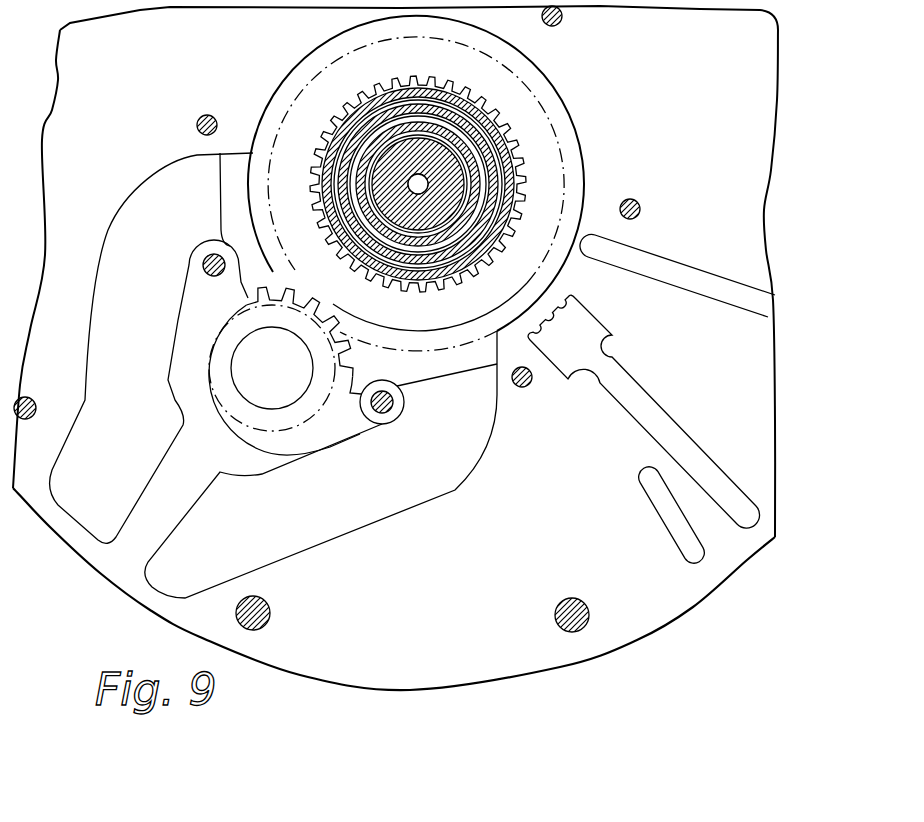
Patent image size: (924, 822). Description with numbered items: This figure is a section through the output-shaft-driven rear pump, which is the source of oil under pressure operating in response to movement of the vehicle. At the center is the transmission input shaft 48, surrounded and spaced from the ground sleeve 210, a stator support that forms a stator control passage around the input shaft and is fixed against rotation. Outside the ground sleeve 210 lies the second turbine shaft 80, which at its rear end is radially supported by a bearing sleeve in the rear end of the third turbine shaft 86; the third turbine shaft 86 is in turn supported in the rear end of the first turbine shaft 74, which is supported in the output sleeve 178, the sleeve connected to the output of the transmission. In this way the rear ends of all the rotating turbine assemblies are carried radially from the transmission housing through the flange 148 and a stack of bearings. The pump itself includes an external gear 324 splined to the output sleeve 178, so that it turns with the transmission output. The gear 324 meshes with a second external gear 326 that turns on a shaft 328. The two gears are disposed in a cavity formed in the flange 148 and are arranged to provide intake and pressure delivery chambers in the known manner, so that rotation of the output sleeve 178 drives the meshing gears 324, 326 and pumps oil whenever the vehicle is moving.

The flange 148 is at (157, 601).
The output sleeve 178 is at (418, 77).
The first turbine shaft 74 is at (380, 108).
The third turbine shaft 86 is at (470, 120).
The second turbine shaft 80 is at (450, 128).
The ground sleeve 210 is at (365, 188).
The transmission input shaft 48 is at (387, 173).
The external gear 324 is at (340, 318).
The second external gear 326 is at (340, 343).
The shaft 328 is at (238, 360).